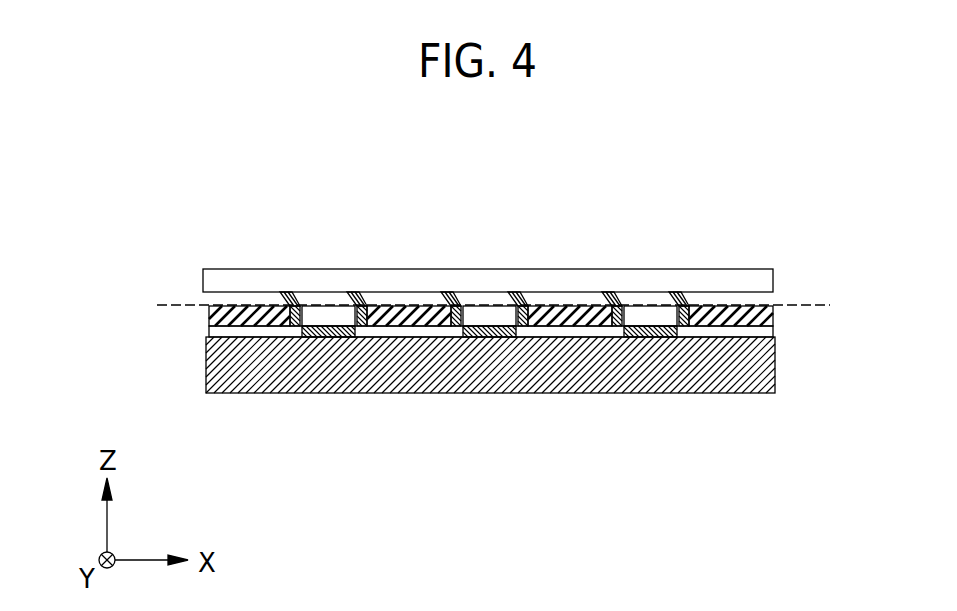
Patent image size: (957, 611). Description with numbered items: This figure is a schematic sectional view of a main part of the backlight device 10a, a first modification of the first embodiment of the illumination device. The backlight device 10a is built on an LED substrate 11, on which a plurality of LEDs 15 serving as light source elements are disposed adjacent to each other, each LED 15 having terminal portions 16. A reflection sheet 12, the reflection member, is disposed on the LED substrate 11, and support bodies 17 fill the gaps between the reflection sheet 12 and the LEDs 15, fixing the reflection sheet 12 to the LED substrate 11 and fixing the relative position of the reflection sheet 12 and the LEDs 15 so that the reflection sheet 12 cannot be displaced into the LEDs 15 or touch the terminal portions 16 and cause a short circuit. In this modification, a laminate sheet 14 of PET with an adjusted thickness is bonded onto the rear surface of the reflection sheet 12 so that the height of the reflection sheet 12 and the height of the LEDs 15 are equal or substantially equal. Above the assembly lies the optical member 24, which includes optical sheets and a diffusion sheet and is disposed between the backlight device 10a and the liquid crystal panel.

The backlight device 10a is at (514, 289).
The LED substrate 11 is at (776, 363).
The reflection sheet 12 is at (405, 308).
The laminate sheet 14 is at (388, 334).
The LED 15 is at (490, 307).
The terminal portion 16 is at (470, 342).
The support body 17 is at (457, 292).
The optical member 24 is at (773, 278).